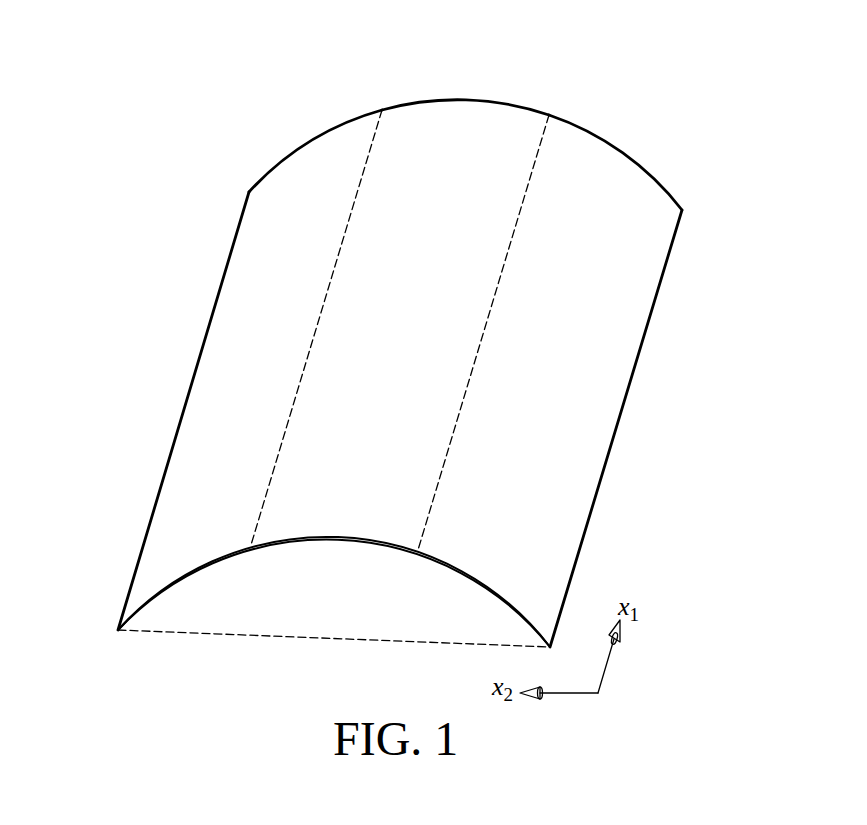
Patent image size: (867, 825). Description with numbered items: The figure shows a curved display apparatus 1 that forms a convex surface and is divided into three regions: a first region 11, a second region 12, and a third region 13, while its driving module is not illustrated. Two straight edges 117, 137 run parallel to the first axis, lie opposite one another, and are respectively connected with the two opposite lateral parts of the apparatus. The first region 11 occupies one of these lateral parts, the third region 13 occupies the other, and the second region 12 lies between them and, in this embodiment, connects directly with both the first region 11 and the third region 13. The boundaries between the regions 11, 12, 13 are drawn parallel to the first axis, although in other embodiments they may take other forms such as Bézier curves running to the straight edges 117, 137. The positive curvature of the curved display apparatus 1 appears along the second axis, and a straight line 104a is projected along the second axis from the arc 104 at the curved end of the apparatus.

The curved display apparatus 1 is at (136, 84).
The first region 11 is at (293, 195).
The second region 12 is at (442, 163).
The third region 13 is at (603, 205).
The straight edge 117 is at (193, 372).
The straight edge 137 is at (620, 418).
The arc 104 is at (343, 540).
The projection of the arc 104a is at (273, 637).